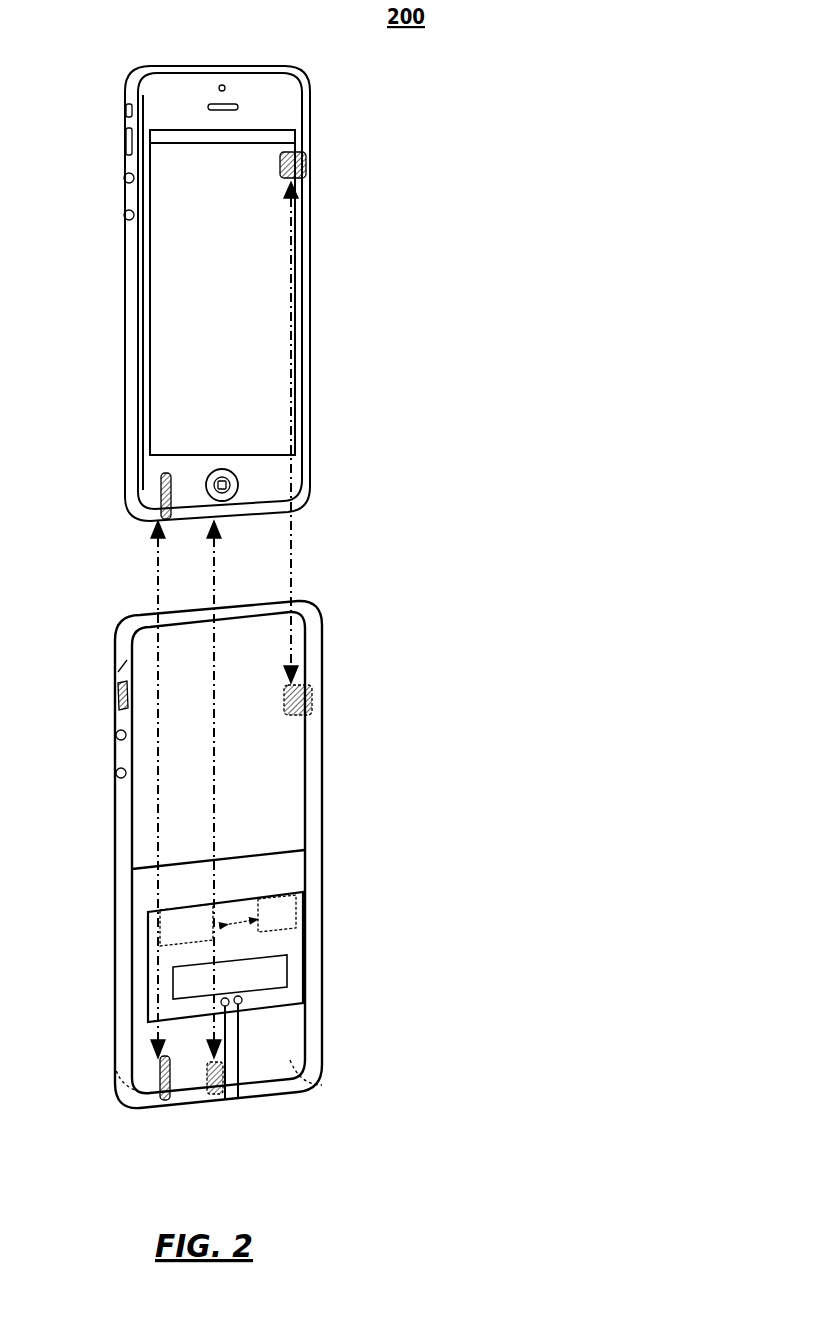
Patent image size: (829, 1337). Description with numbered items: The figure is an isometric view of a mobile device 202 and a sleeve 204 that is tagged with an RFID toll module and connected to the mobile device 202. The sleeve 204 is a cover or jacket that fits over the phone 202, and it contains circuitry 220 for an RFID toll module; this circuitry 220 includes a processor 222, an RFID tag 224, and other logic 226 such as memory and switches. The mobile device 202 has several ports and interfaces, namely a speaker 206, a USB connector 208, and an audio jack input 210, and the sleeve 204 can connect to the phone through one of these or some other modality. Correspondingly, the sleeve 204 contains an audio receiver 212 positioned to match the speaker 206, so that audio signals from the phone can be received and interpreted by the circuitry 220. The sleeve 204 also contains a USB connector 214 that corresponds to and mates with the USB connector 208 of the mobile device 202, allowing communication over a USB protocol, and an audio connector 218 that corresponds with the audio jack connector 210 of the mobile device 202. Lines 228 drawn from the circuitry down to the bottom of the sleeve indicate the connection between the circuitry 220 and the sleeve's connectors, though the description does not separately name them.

The mobile device 202 is at (312, 132).
The sleeve 204 is at (324, 648).
The speaker 206 is at (308, 167).
The USB connector 208 is at (237, 502).
The audio jack input 210 is at (160, 510).
The audio receiver 212 is at (313, 698).
The USB connector 214 is at (240, 1078).
The audio connector 218 is at (163, 1097).
The circuitry 220 is at (262, 852).
The processor 222 is at (297, 916).
The RFID tag 224 is at (150, 932).
The other logic 226 is at (287, 970).
The connection lines 228 is at (240, 1046).